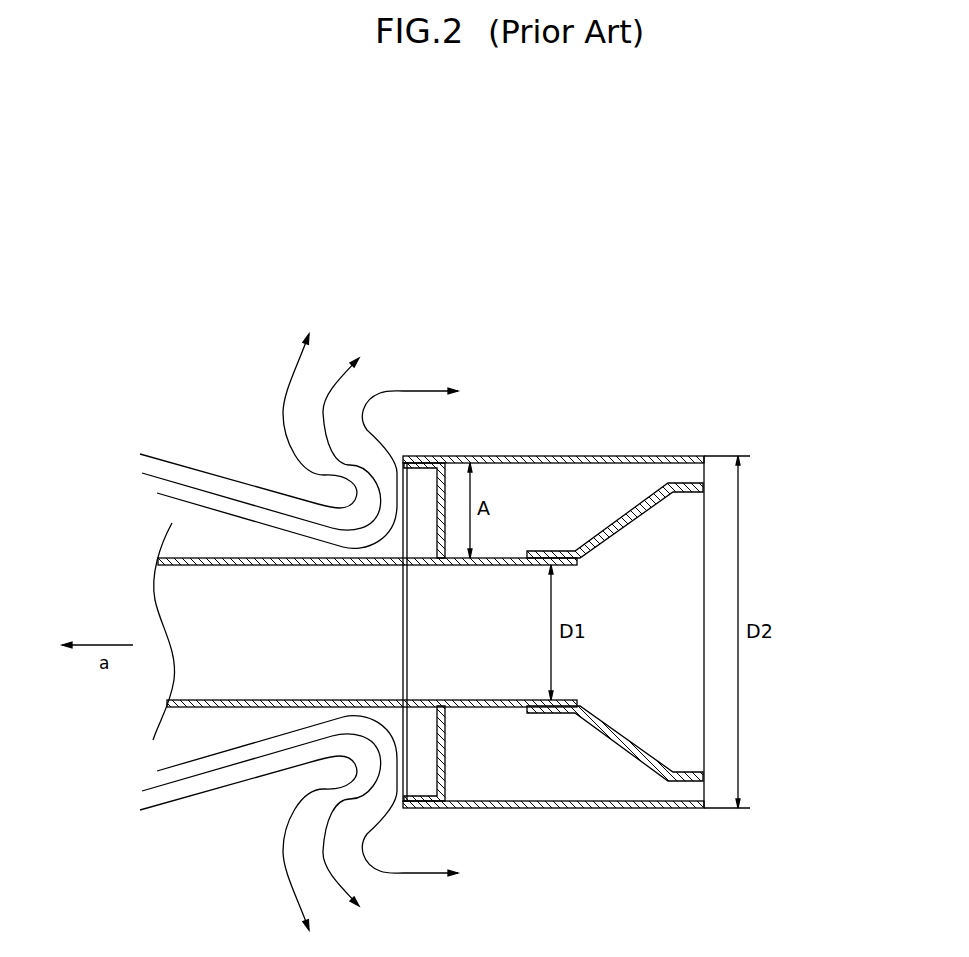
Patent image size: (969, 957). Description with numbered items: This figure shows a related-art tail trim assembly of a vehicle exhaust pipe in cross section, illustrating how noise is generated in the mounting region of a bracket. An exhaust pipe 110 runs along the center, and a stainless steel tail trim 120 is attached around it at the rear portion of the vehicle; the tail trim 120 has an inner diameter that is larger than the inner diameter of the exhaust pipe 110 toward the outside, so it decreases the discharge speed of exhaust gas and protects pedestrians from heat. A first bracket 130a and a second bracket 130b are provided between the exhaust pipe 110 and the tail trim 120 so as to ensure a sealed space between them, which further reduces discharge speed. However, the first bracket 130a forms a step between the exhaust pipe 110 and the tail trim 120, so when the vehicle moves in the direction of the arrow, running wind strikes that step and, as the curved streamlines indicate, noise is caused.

The exhaust pipe 110 is at (215, 707).
The tail trim 120 is at (593, 808).
The first bracket 130a is at (445, 770).
The second bracket 130b is at (680, 782).